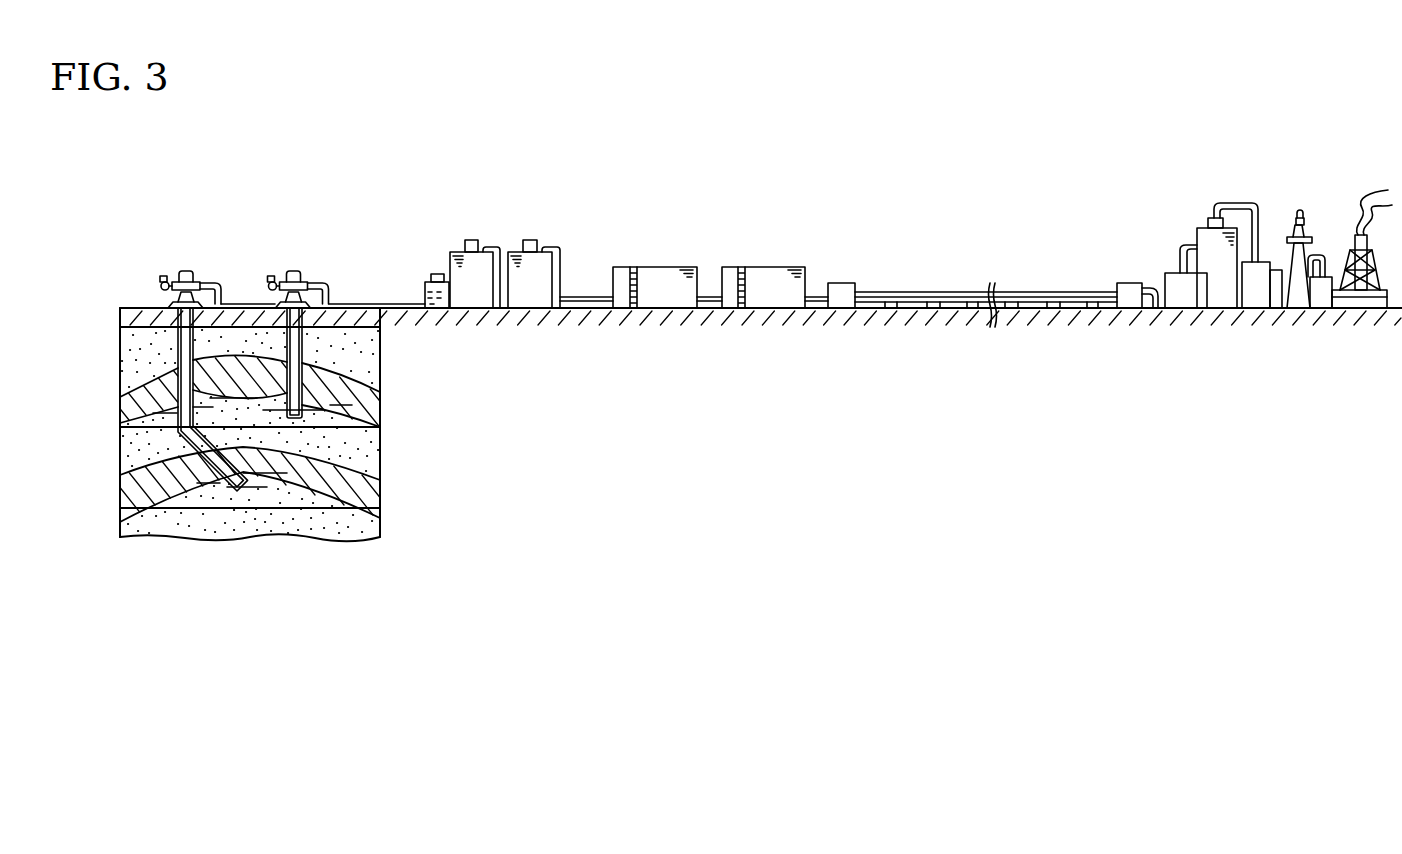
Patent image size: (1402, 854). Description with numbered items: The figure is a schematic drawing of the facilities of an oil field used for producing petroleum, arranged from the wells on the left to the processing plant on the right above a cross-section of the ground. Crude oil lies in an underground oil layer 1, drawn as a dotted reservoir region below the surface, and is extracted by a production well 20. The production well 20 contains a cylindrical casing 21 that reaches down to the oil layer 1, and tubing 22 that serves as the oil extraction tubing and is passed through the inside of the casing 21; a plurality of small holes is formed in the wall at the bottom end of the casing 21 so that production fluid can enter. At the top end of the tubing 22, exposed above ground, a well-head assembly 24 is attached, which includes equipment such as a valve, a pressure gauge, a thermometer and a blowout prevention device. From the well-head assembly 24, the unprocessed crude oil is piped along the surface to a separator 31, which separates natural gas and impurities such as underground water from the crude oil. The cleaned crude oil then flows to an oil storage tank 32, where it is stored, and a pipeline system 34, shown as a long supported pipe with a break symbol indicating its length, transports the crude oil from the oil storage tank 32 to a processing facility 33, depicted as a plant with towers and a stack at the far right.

The oil layer 1 is at (330, 420).
The production well 20 is at (275, 330).
The casing 21 is at (178, 349).
The tubing 22 is at (180, 380).
The well-head assembly 24 is at (192, 277).
The separator 31 is at (418, 235).
The oil storage tank 32 is at (613, 248).
The processing facility 33 is at (1163, 188).
The pipeline system 34 is at (830, 248).